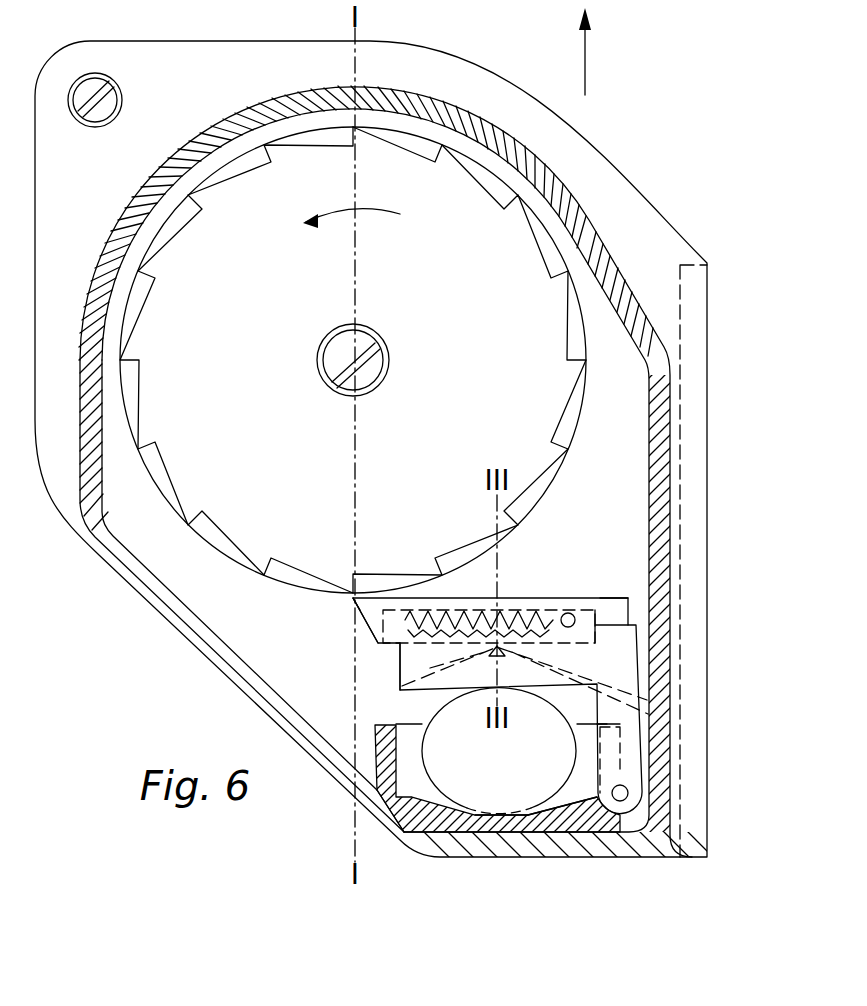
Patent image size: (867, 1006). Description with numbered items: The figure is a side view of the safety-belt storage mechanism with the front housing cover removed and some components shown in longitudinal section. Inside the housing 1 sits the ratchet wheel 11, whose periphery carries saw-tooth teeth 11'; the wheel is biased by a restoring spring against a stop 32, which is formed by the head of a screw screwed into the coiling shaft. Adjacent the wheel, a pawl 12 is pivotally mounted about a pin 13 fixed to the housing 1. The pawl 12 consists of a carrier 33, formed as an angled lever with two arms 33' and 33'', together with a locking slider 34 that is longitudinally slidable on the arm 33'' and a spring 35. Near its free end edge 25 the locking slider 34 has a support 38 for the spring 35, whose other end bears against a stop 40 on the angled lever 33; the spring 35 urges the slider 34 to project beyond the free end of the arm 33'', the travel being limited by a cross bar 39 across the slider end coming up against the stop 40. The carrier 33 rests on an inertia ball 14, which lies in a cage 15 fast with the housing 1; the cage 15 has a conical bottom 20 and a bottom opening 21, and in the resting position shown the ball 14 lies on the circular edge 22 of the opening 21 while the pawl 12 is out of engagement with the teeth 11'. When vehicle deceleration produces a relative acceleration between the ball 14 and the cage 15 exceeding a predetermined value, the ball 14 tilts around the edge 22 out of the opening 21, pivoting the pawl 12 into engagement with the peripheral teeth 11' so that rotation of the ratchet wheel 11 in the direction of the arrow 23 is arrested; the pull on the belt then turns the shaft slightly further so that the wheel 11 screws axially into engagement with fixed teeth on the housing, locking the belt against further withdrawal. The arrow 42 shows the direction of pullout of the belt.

The housing 1 is at (230, 672).
The ratchet wheel 11 is at (353, 360).
The peripheral teeth 11' is at (399, 84).
The pawl 12 is at (588, 518).
The pin 13 is at (628, 792).
The ball 14 is at (481, 794).
The cage 15 is at (413, 811).
The conical bottom 20 is at (553, 800).
The bottom opening 21 is at (517, 820).
The circular edge 22 is at (473, 814).
The arrow 23 is at (353, 211).
The free end edge 25 is at (352, 598).
The stop 32 is at (338, 352).
The carrier 33 is at (567, 618).
The arm 33' is at (679, 727).
The arm 33'' is at (582, 671).
The locking slider 34 is at (372, 617).
The spring 35 is at (498, 611).
The support 38 is at (400, 636).
The cross bar 39 is at (592, 598).
The stop 40 is at (562, 613).
The arrow 42 is at (585, 80).